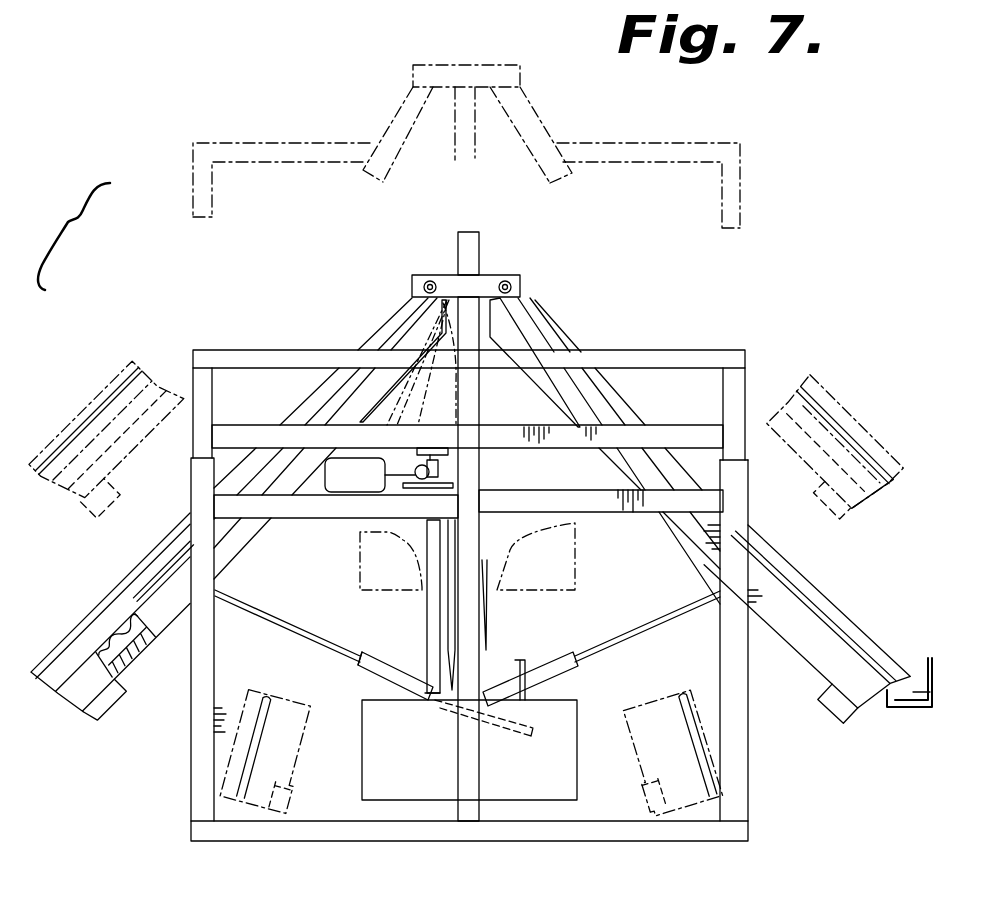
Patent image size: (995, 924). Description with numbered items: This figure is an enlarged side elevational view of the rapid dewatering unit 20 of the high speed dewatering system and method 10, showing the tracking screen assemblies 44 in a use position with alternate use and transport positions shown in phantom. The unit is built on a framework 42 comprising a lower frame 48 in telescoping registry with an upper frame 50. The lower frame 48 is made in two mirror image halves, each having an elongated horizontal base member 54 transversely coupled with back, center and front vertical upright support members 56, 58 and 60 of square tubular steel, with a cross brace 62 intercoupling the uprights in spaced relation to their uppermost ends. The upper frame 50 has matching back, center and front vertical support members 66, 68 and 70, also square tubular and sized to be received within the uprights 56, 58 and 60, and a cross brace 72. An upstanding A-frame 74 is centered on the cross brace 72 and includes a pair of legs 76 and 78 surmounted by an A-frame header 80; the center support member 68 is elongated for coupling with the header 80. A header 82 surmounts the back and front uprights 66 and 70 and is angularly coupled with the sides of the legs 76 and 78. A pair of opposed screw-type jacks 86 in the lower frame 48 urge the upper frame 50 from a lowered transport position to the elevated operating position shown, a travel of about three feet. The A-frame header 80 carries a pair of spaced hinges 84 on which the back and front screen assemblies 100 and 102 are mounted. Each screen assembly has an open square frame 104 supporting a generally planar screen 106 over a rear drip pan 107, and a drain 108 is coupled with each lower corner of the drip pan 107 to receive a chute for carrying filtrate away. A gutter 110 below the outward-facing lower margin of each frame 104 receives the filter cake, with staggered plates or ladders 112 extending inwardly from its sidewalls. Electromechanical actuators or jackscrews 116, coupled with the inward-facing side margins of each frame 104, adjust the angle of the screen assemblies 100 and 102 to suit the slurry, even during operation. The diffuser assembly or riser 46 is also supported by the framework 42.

The high speed dewatering system and method 10 is at (218, 70).
The rapid dewatering unit 20 is at (600, 263).
The framework 42 is at (747, 348).
The tracking screen assembly 44 is at (335, 325).
The diffuser assembly or riser 46 is at (490, 622).
The lower frame 48 is at (752, 667).
The upper frame 50 is at (747, 385).
The horizontal base member 54 is at (487, 830).
The back vertical upright support member 56 is at (190, 750).
The center vertical upright support member 58 is at (473, 763).
The front vertical upright support member 60 is at (737, 775).
The cross brace 62 is at (603, 507).
The back vertical support member 66 is at (210, 408).
The center vertical support member 68 is at (474, 422).
The front vertical support member 70 is at (733, 393).
The cross brace 72 is at (553, 442).
The A-frame 74 is at (517, 272).
The A-frame leg 76 is at (380, 373).
The A-frame leg 78 is at (542, 363).
The A-frame header 80 is at (455, 75).
The header 82 is at (672, 143).
The hinges 84 is at (424, 283).
The screw-type jack 86 is at (438, 473).
The back screen assembly 100 is at (80, 622).
The front screen assembly 102 is at (825, 583).
The open square frame 104 is at (90, 427).
The screen 106 is at (118, 633).
The rear drip pan 107 is at (133, 663).
The drain 108 is at (847, 715).
The gutter 110 is at (915, 708).
The staggered plates or ladders 112 is at (922, 687).
The electromechanical actuator or jackscrew 116 is at (287, 617).